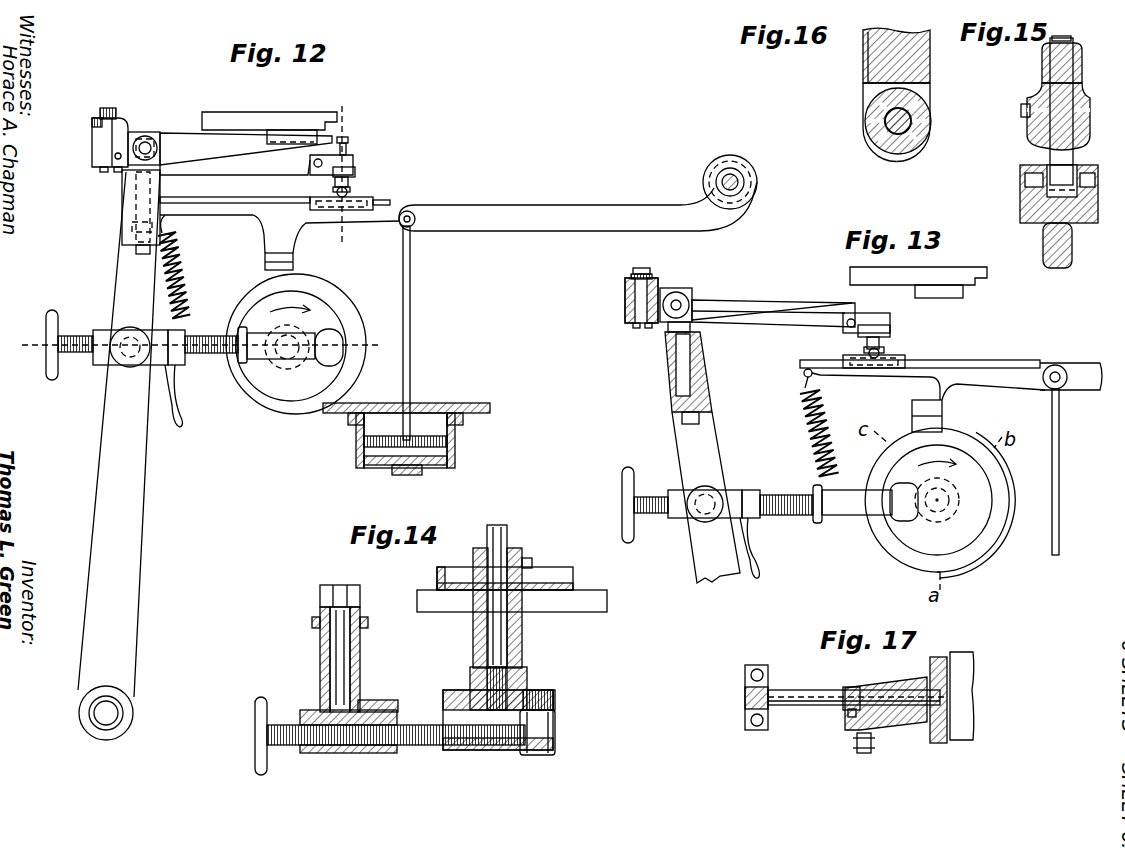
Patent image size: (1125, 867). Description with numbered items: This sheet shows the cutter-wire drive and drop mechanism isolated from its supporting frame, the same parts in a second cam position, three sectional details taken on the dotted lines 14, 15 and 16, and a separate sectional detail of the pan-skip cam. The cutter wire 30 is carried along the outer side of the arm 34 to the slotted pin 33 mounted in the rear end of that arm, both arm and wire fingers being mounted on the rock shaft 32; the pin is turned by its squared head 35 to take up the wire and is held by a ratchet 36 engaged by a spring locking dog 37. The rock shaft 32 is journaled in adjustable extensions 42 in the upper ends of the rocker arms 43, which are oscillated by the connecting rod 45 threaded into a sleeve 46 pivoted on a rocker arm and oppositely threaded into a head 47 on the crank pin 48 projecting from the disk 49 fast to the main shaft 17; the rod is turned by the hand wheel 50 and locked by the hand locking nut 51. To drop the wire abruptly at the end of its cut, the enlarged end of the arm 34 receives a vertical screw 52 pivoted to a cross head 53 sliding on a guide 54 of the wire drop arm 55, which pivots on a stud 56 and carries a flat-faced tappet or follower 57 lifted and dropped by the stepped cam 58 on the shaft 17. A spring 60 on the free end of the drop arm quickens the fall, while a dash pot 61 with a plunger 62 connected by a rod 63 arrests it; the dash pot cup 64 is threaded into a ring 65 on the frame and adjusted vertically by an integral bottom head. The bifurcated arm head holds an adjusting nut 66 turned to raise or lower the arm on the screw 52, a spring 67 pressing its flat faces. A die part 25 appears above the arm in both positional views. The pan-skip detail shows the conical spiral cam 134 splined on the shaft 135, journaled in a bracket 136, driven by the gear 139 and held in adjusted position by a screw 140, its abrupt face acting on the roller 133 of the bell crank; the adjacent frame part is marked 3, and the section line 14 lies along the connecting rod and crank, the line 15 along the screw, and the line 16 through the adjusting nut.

In FIG. 14, the frame plate 3 is at (578, 598).
In FIG. 17, the frame plate 3 is at (965, 673).
In FIG. 12, the section line 14— 14 is at (196, 345).
In FIG. 12, the section line 15— 15 is at (342, 171).
In FIG. 15, the section line 16— 16 is at (1020, 111).
In FIG. 12, the main shaft 17 is at (280, 340).
In FIG. 13, the main shaft 17 is at (945, 500).
In FIG. 14, the main shaft 17 is at (505, 635).
In FIG. 12, the bracket 25 is at (285, 127).
In FIG. 13, the bracket 25 is at (965, 292).
In FIG. 12, the cutter wire 30 is at (222, 160).
In FIG. 13, the cutter wire 30 is at (727, 311).
In FIG. 12, the rock shaft 32 is at (148, 146).
In FIG. 13, the rock shaft 32 is at (678, 302).
In FIG. 12, the pin 33 is at (106, 171).
In FIG. 13, the pin 33 is at (640, 330).
In FIG. 12, the arm 34 is at (263, 165).
In FIG. 13, the arm 34 is at (776, 310).
In FIG. 15, the arm 34 is at (1042, 70).
In FIG. 16, the arm 34 is at (918, 49).
In FIG. 12, the squared head 35 is at (108, 108).
In FIG. 13, the squared head 35 is at (632, 270).
In FIG. 12, the ratchet 36 is at (94, 121).
In FIG. 13, the ratchet 36 is at (626, 290).
In FIG. 12, the spring locking dog 37 is at (120, 130).
In FIG. 12, the adjustable extension 42 is at (135, 205).
In FIG. 13, the adjustable extension 42 is at (682, 368).
In FIG. 12, the rocker arm 43 is at (108, 460).
In FIG. 13, the rocker arm 43 is at (690, 564).
In FIG. 14, the rocker arm 43 is at (318, 644).
In FIG. 12, the connecting rod 45 is at (222, 340).
In FIG. 13, the connecting rod 45 is at (782, 496).
In FIG. 14, the connecting rod 45 is at (420, 750).
In FIG. 12, the sleeve 46 is at (110, 350).
In FIG. 13, the sleeve 46 is at (678, 492).
In FIG. 14, the sleeve 46 is at (345, 751).
In FIG. 12, the head 47 is at (262, 350).
In FIG. 14, the head 47 is at (485, 751).
In FIG. 12, the crank pin 48 is at (335, 336).
In FIG. 13, the crank pin 48 is at (903, 507).
In FIG. 14, the crank pin 48 is at (556, 731).
In FIG. 12, the disk 49 is at (322, 312).
In FIG. 13, the disk 49 is at (970, 487).
In FIG. 14, the disk 49 is at (556, 700).
In FIG. 12, the hand wheel 50 is at (52, 311).
In FIG. 13, the hand wheel 50 is at (627, 469).
In FIG. 14, the hand wheel 50 is at (259, 704).
In FIG. 12, the hand locking nut 51 is at (184, 414).
In FIG. 13, the hand locking nut 51 is at (755, 579).
In FIG. 14, the hand locking nut 51 is at (366, 718).
In FIG. 12, the vertical screw 52 is at (347, 139).
In FIG. 13, the vertical screw 52 is at (866, 347).
In FIG. 15, the vertical screw 52 is at (1047, 160).
In FIG. 16, the vertical screw 52 is at (886, 148).
In FIG. 12, the cross head 53 is at (353, 197).
In FIG. 13, the cross head 53 is at (890, 357).
In FIG. 15, the cross head 53 is at (1022, 203).
In FIG. 12, the guide 54 is at (296, 190).
In FIG. 13, the guide 54 is at (968, 360).
In FIG. 15, the guide 54 is at (1032, 223).
In FIG. 12, the wire drop arm 55 is at (543, 212).
In FIG. 13, the wire drop arm 55 is at (1077, 370).
In FIG. 15, the wire drop arm 55 is at (1067, 240).
In FIG. 12, the stud 56 is at (718, 178).
In FIG. 12, the tappet or follower 57 is at (265, 268).
In FIG. 13, the tappet or follower 57 is at (940, 421).
In FIG. 12, the cam 58 is at (283, 405).
In FIG. 13, the cam 58 is at (906, 557).
In FIG. 14, the cam 58 is at (548, 570).
In FIG. 12, the spring 60 is at (184, 266).
In FIG. 13, the spring 60 is at (830, 415).
In FIG. 12, the dash pot 61 is at (375, 428).
In FIG. 12, the plunger 62 is at (458, 440).
In FIG. 12, the rod 63 is at (411, 306).
In FIG. 13, the rod 63 is at (1059, 450).
In FIG. 12, the cup 64 is at (456, 458).
In FIG. 12, the ring 65 is at (466, 395).
In FIG. 12, the adjusting nut 66 is at (355, 171).
In FIG. 13, the adjusting nut 66 is at (895, 332).
In FIG. 15, the adjusting nut 66 is at (1030, 100).
In FIG. 16, the adjusting nut 66 is at (868, 116).
In FIG. 12, the spring 67 is at (351, 159).
In FIG. 13, the spring 67 is at (880, 320).
In FIG. 15, the spring 67 is at (1027, 120).
In FIG. 16, the spring 67 is at (866, 92).
In FIG. 17, the roller 133 is at (858, 746).
In FIG. 17, the cam 134 is at (899, 722).
In FIG. 17, the shaft 135 is at (813, 683).
In FIG. 17, the bracket 136 is at (745, 690).
In FIG. 17, the gear 139 is at (935, 742).
In FIG. 17, the screw 140 is at (845, 716).